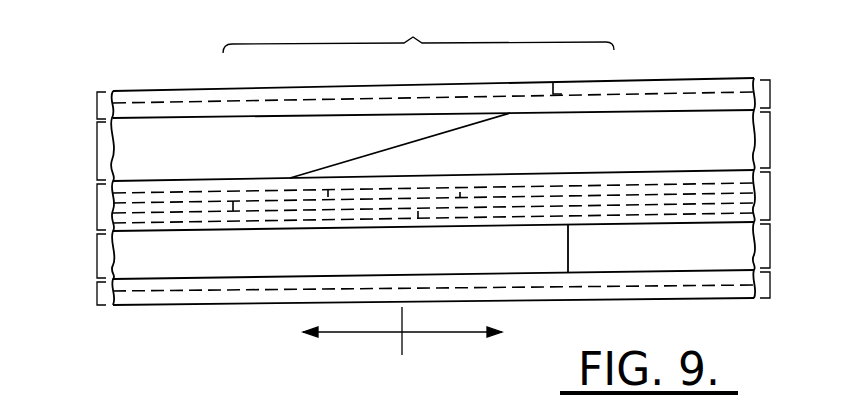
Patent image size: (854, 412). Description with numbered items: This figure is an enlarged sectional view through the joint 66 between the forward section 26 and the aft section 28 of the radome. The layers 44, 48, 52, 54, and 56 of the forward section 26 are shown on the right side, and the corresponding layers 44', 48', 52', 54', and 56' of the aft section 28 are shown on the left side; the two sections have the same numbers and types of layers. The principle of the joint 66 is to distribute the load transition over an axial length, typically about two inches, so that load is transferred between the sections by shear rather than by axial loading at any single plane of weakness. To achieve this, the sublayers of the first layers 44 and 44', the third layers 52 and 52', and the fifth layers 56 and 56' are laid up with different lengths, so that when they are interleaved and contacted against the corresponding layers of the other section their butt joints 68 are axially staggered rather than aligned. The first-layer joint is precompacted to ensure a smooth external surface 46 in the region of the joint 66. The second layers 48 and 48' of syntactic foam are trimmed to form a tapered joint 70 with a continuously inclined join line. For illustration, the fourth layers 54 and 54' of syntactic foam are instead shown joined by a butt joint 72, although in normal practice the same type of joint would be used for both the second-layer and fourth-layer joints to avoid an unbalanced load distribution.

The forward section 26 is at (452, 347).
The aft section 28 is at (352, 337).
The first layer 44 is at (466, 93).
The first layer 44' is at (74, 102).
The external surface 46 is at (442, 86).
The second layer 48 is at (789, 140).
The second layer 48' is at (74, 151).
The third layer 52 is at (466, 200).
The third layer 52' is at (74, 207).
The fourth layer 54 is at (789, 246).
The fourth layer 54' is at (74, 256).
The fifth layer 56 is at (466, 285).
The fifth layer 56' is at (74, 293).
The joint 66 is at (418, 29).
The butt joints 68 is at (302, 100).
The tapered joint 70 is at (357, 159).
The butt joint 72 is at (567, 240).